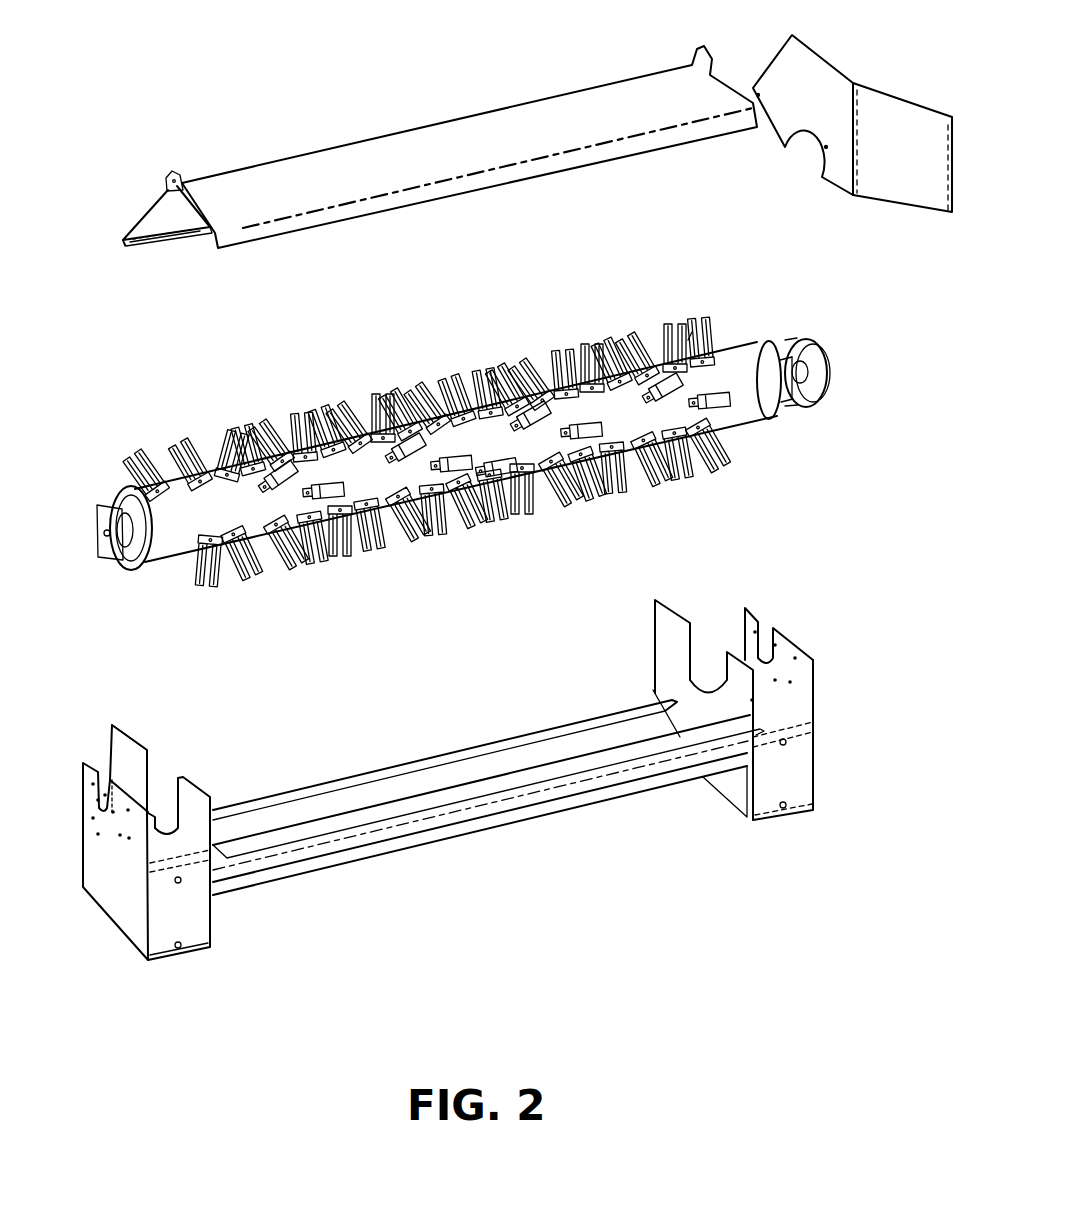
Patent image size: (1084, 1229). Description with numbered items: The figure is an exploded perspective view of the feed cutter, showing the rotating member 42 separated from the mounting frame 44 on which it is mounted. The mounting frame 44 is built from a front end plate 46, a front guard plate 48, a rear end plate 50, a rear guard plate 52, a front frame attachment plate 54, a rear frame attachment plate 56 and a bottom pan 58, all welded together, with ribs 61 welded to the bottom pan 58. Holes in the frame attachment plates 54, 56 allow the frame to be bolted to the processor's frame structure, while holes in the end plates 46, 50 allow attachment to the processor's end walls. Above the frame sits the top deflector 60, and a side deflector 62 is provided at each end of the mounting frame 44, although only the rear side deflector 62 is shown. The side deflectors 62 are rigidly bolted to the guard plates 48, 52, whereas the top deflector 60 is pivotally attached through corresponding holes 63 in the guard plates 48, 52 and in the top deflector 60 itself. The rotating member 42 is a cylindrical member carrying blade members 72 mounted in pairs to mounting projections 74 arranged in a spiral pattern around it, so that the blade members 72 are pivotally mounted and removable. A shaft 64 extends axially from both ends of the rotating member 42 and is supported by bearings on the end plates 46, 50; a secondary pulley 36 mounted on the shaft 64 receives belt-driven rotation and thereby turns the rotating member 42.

The secondary pulley 36 is at (832, 378).
The rotating member 42 is at (755, 415).
The mounting frame 44 is at (653, 935).
The front end plate 46 is at (112, 902).
The front guard plate 48 is at (128, 748).
The rear end plate 50 is at (818, 700).
The rear guard plate 52 is at (678, 613).
The front frame attachment plate 54 is at (190, 921).
The rear frame attachment plate 56 is at (790, 778).
The bottom pan 58 is at (535, 815).
The top deflector 60 is at (445, 132).
The ribs 61 is at (421, 760).
The side deflector 62 is at (905, 96).
The holes 63 is at (120, 247).
The shaft 64 is at (812, 349).
The blade members 72 is at (218, 455).
The mounting projections 74 is at (704, 346).